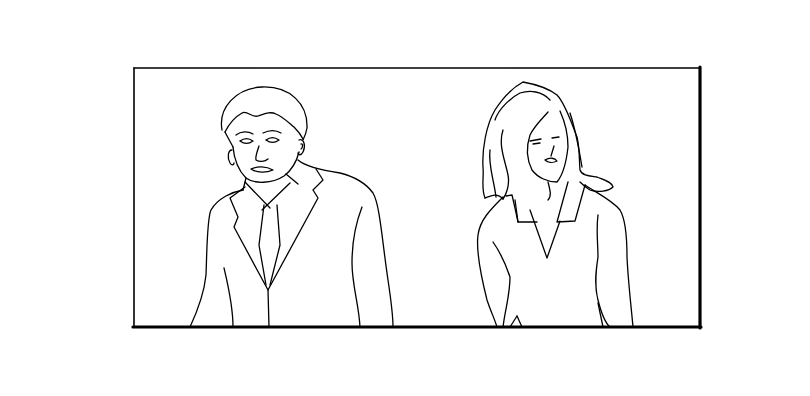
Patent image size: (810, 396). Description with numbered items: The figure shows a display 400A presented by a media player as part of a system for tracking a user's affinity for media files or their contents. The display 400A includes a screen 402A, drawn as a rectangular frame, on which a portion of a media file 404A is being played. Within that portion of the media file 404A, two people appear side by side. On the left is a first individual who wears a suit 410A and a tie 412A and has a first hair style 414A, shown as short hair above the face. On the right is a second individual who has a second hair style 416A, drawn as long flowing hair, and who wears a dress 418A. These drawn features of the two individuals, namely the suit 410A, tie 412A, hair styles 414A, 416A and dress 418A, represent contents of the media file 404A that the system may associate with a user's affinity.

The display 400A is at (108, 57).
The screen 402A is at (687, 67).
The media file 404A is at (660, 138).
The suit 410A is at (222, 212).
The tie 412A is at (316, 169).
The first hair style 414A is at (296, 99).
The second hair style 416A is at (565, 119).
The dress 418A is at (580, 243).